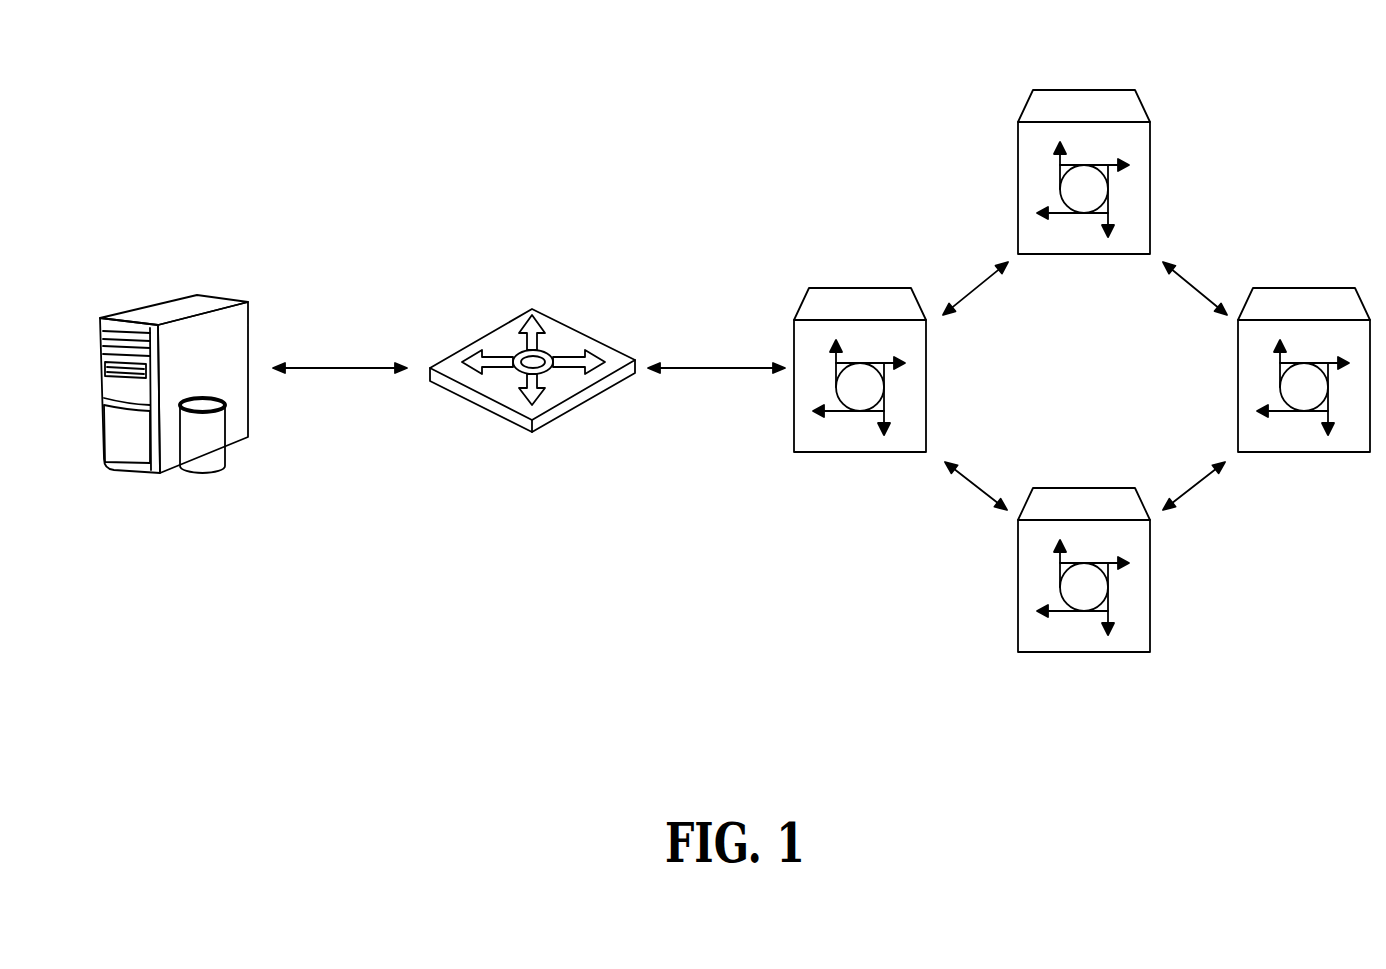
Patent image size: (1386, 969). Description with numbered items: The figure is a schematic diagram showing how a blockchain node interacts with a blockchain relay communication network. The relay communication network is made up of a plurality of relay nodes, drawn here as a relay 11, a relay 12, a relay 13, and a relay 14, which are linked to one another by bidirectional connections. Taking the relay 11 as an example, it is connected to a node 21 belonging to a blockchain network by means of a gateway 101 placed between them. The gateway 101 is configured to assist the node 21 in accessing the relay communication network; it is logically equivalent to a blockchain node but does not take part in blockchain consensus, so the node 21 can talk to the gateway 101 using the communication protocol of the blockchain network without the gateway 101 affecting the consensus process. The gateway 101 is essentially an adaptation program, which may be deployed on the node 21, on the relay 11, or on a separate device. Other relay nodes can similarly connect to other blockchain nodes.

The node 21 is at (190, 312).
The gateway 101 is at (513, 342).
The relay 11 is at (868, 303).
The relay 12 is at (1092, 108).
The relay 13 is at (1089, 504).
The relay 14 is at (1295, 295).